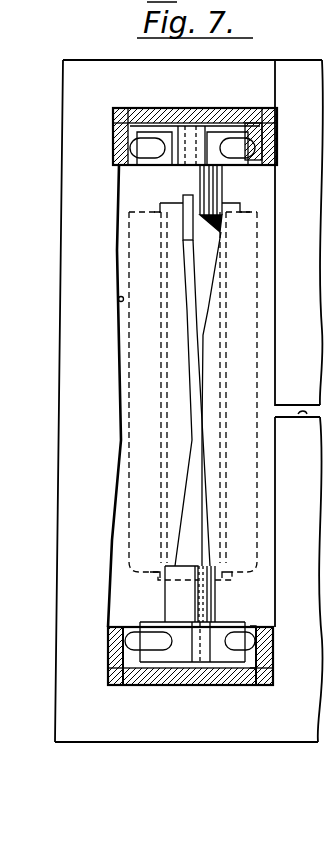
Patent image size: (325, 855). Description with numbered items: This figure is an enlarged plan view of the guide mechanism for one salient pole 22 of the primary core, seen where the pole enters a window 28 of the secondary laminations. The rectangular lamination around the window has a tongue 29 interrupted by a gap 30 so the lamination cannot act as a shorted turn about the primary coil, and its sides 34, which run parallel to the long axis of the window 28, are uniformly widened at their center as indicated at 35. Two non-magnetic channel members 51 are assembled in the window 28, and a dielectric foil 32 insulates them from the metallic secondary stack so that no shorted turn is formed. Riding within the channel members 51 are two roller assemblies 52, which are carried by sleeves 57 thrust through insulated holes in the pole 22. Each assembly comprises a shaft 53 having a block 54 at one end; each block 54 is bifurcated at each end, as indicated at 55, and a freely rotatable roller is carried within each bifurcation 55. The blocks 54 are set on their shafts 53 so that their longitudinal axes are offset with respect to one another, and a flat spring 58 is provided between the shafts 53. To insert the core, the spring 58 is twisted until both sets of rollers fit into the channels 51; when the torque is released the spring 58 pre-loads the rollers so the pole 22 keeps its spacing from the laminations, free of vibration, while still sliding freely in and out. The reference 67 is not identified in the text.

The salient pole 22 is at (137, 268).
The window 28 is at (118, 300).
The lamination tongue 29 is at (297, 343).
The gap 30 is at (305, 416).
The dielectric foil 32 is at (98, 648).
The side 34 is at (67, 545).
The widened center portion 35 is at (89, 407).
The channel member 51 is at (113, 156).
The roller assembly 52 is at (248, 128).
The shaft 53 is at (176, 203).
The block 54 is at (162, 130).
The bifurcation 55 is at (247, 628).
The sleeve 57 is at (113, 128).
The flat spring 58 is at (199, 386).
The shaft block 67 is at (163, 577).